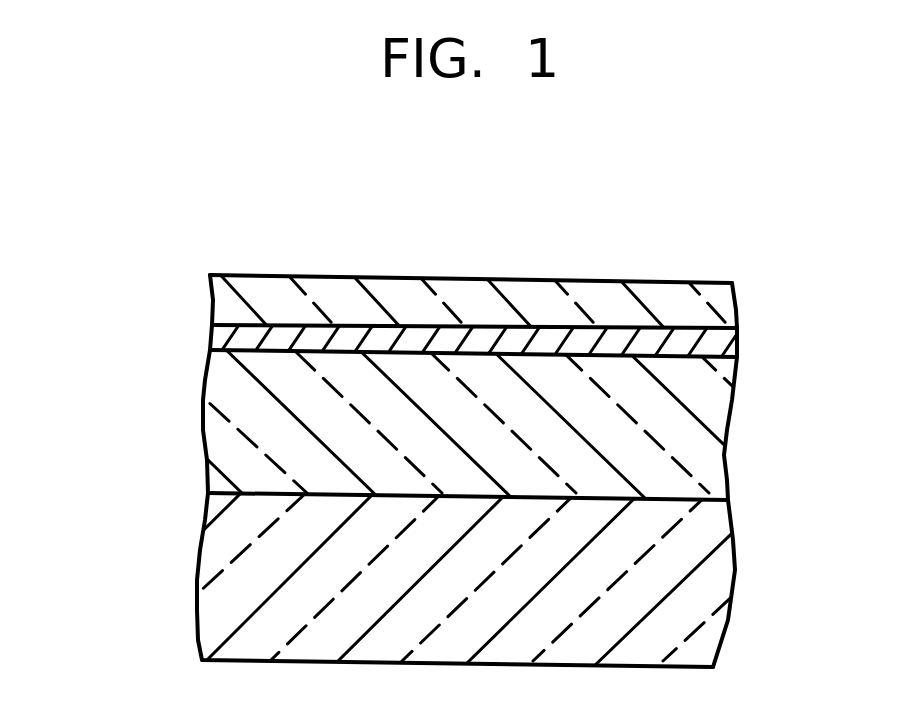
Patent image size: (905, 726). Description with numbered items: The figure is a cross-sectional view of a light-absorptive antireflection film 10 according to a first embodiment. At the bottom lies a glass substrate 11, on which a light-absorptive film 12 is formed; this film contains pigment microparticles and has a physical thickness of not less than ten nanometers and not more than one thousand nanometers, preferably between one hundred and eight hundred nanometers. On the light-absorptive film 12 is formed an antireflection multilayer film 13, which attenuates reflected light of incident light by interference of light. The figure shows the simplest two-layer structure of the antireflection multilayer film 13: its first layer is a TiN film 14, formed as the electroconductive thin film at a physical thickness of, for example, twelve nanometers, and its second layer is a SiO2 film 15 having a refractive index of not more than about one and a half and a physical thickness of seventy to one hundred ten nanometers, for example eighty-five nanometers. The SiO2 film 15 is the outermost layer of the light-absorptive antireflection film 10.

The light-absorptive antireflection film 10 is at (152, 578).
The glass substrate 11 is at (703, 588).
The light-absorptive film 12 is at (710, 420).
The antireflection multilayer film 13 is at (178, 273).
The TiN film 14 is at (723, 345).
The SiO2 film 15 is at (715, 317).